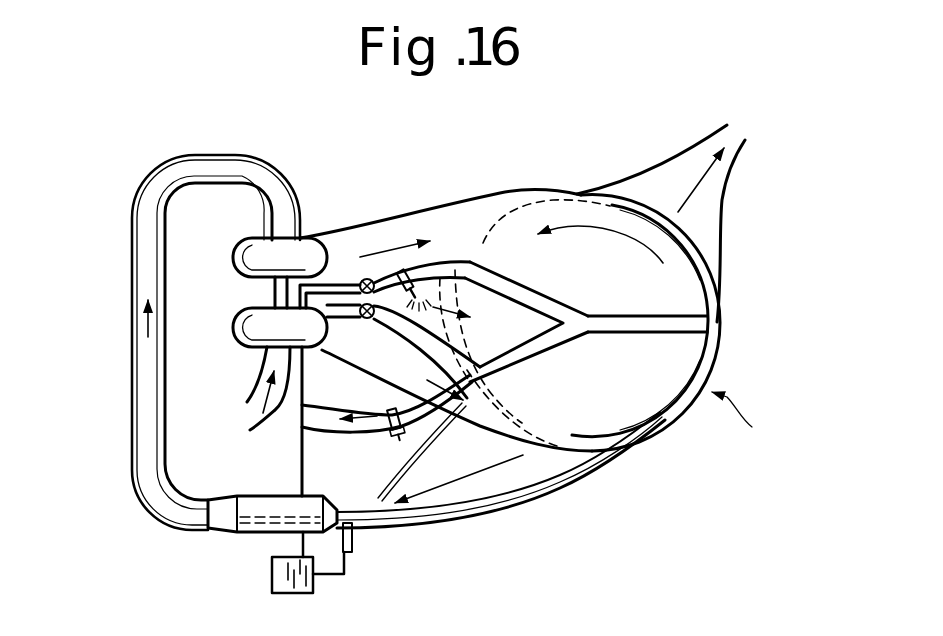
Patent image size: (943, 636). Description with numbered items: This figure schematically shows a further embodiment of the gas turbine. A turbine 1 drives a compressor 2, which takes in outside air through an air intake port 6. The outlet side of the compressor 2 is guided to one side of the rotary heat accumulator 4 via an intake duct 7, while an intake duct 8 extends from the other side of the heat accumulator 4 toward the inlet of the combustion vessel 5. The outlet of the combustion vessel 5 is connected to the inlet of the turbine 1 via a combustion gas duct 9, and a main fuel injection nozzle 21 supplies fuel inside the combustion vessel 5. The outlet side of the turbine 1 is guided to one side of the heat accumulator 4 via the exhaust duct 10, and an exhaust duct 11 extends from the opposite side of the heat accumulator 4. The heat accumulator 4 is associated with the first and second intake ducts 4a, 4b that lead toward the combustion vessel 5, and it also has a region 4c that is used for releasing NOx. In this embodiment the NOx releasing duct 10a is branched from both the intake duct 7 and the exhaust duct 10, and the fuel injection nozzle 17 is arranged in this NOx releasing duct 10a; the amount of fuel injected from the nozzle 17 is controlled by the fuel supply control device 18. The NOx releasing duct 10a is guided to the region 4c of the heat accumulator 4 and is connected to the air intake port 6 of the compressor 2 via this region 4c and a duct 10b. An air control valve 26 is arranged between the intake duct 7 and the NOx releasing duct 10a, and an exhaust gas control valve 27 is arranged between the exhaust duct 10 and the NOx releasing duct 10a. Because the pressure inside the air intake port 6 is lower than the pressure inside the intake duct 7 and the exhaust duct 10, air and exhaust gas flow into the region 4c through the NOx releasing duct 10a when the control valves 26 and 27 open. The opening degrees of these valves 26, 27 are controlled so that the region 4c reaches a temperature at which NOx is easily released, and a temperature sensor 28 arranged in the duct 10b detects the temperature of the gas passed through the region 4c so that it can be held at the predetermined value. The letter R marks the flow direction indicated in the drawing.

The turbine 1 is at (245, 253).
The compressor 2 is at (248, 320).
The rotary heat accumulator 4 is at (669, 323).
The first intake duct 4a is at (647, 407).
The second intake duct 4b is at (667, 293).
The region of the heat accumulator 4c is at (492, 300).
The combustion vessel 5 is at (266, 500).
The air intake port 6 is at (263, 360).
The intake duct 7 is at (478, 405).
The intake duct 8 is at (520, 487).
The combustion gas duct 9 is at (140, 400).
The exhaust duct 10 is at (467, 227).
The NOx releasing duct 10a is at (445, 257).
The duct 10b is at (366, 432).
The exhaust duct 11 is at (745, 150).
The fuel injection nozzle 17 is at (405, 272).
The fuel supply control device 18 is at (272, 573).
The main fuel injection nozzle 21 is at (351, 540).
The air control valve 26 is at (342, 347).
The exhaust gas control valve 27 is at (363, 279).
The temperature sensor 28 is at (400, 441).
The flow direction R is at (576, 225).